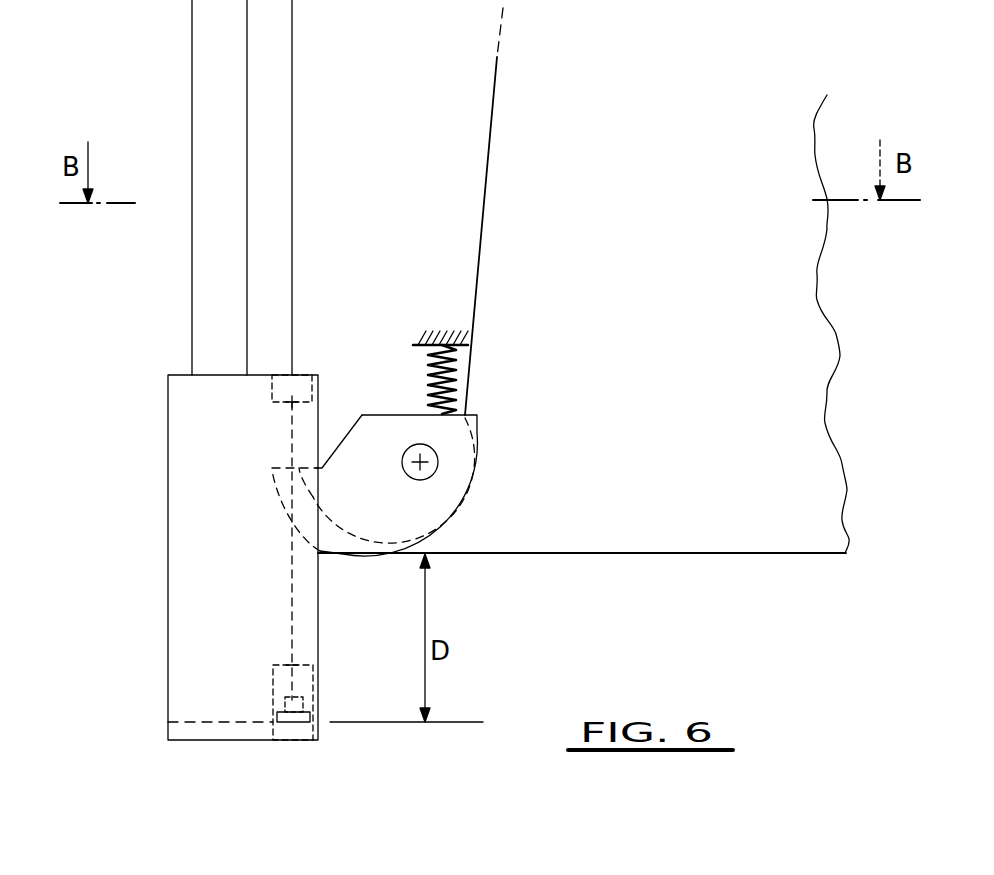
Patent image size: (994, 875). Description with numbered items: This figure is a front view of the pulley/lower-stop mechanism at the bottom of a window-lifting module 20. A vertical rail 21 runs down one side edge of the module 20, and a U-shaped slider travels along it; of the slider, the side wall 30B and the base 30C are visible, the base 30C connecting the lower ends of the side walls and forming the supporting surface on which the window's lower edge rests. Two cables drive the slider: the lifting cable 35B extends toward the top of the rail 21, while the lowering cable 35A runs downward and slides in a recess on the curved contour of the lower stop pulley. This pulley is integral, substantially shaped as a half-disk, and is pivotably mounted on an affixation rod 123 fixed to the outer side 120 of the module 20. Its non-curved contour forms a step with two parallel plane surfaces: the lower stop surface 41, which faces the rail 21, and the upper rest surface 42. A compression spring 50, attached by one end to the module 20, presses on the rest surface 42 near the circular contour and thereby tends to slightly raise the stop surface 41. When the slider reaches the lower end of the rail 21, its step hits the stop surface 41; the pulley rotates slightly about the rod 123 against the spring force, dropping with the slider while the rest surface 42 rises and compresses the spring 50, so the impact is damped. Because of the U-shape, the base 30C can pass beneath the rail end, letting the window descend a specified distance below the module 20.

The module 20 is at (647, 561).
The rail 21 is at (213, 322).
The side wall 30B is at (181, 548).
The base 30C is at (168, 737).
The lowering cable 35A is at (489, 160).
The lifting cable 35B is at (292, 125).
The stop surface 41 is at (322, 466).
The rest surface 42 is at (386, 415).
The compression spring 50 is at (458, 377).
The outer side of the module 120 is at (735, 477).
The affixation rod 123 is at (424, 462).